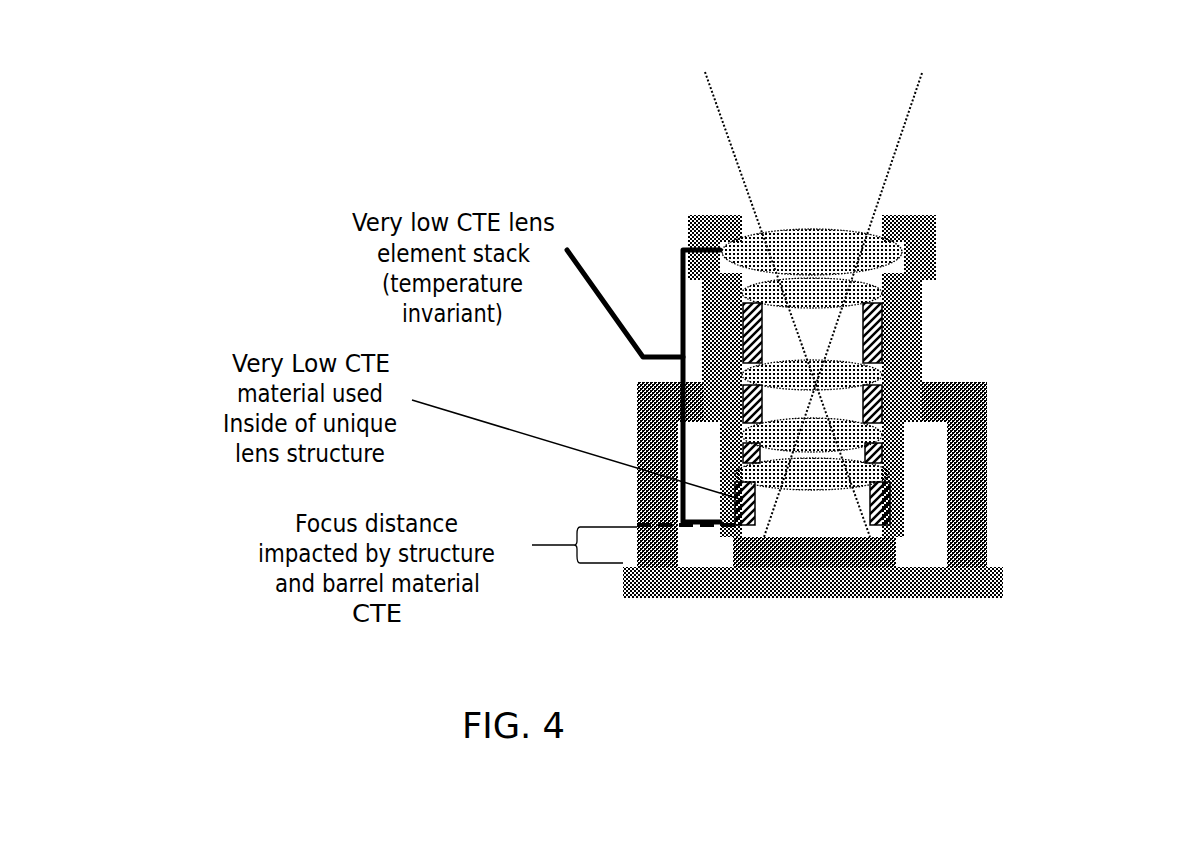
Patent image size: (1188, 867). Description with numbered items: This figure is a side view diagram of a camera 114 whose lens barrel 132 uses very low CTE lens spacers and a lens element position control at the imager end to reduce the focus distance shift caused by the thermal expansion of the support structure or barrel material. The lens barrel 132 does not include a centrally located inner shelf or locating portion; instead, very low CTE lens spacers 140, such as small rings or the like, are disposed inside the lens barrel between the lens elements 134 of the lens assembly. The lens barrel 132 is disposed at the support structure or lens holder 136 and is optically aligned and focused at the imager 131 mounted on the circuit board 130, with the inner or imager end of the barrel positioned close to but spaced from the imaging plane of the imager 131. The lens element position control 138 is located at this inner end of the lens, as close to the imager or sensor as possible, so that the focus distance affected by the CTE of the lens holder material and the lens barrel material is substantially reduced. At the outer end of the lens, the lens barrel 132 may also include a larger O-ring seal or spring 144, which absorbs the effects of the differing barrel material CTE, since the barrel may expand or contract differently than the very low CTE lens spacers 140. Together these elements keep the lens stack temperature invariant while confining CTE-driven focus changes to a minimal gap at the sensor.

The camera 114 is at (903, 397).
The circuit board 130 is at (895, 578).
The imager 131 is at (877, 550).
The lens barrel 132 is at (907, 435).
The lens elements 134 is at (808, 478).
The support structure or lens holder 136 is at (978, 477).
The lens element position control 138 is at (880, 530).
The very low CTE lens spacers 140 is at (890, 503).
The O-ring seal or spring 144 is at (895, 232).